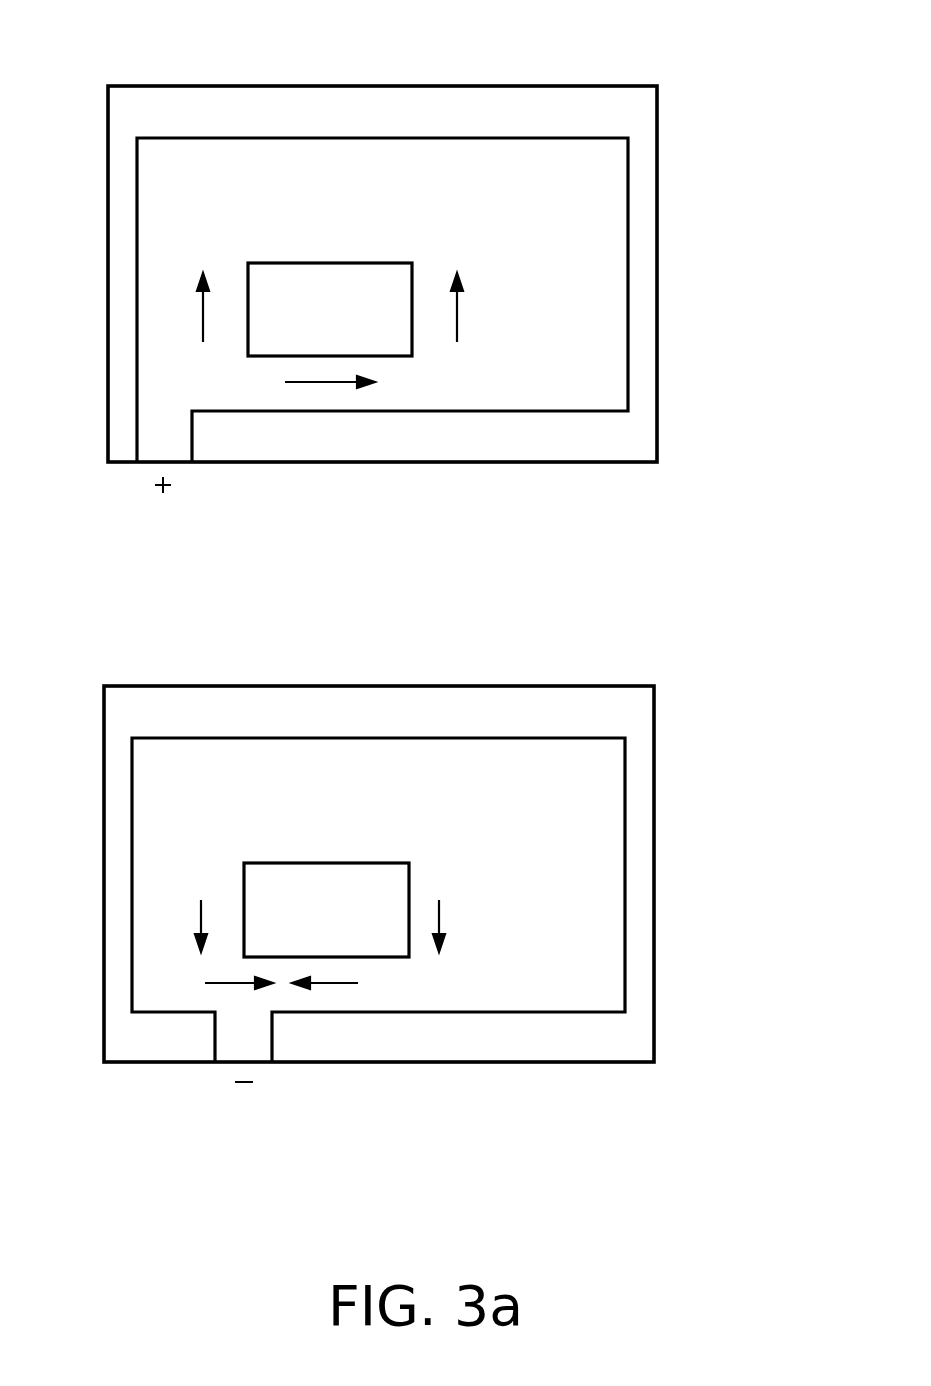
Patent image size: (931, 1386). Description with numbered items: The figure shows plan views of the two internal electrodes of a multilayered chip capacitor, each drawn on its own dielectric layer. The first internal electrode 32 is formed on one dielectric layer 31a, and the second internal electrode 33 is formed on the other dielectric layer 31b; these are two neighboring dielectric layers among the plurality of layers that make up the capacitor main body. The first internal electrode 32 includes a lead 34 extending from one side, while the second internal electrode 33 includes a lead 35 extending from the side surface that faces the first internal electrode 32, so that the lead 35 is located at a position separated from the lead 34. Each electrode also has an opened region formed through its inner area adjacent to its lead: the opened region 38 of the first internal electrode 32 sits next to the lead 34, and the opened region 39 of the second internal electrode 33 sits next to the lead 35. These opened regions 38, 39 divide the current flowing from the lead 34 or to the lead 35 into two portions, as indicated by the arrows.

The dielectric layer 31a is at (657, 272).
The dielectric layer 31b is at (654, 856).
The first internal electrode 32 is at (382, 152).
The second internal electrode 33 is at (426, 752).
The lead 34 is at (147, 453).
The lead 35 is at (228, 1050).
The opened region 38 is at (285, 278).
The opened region 39 is at (392, 947).